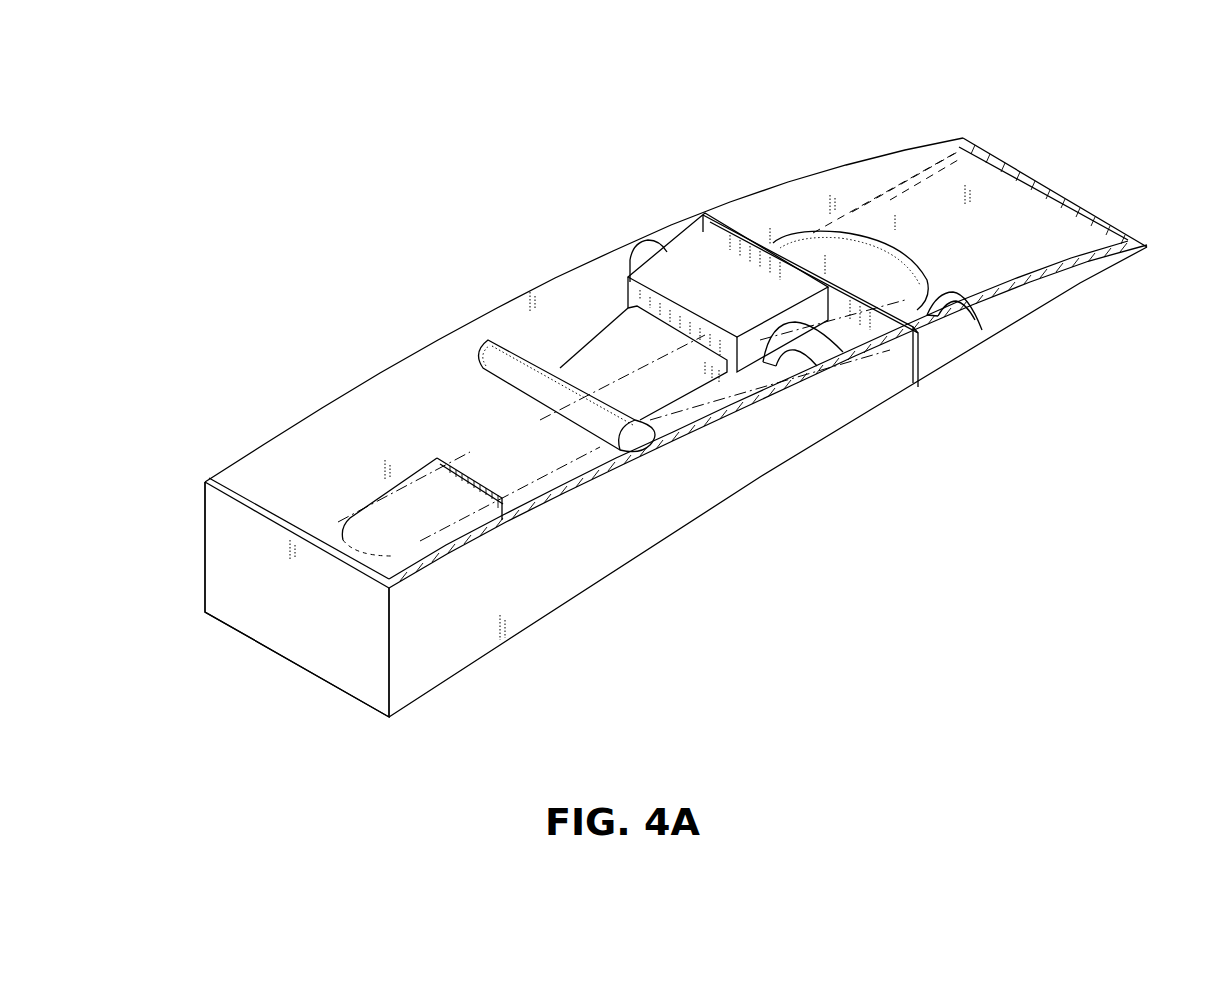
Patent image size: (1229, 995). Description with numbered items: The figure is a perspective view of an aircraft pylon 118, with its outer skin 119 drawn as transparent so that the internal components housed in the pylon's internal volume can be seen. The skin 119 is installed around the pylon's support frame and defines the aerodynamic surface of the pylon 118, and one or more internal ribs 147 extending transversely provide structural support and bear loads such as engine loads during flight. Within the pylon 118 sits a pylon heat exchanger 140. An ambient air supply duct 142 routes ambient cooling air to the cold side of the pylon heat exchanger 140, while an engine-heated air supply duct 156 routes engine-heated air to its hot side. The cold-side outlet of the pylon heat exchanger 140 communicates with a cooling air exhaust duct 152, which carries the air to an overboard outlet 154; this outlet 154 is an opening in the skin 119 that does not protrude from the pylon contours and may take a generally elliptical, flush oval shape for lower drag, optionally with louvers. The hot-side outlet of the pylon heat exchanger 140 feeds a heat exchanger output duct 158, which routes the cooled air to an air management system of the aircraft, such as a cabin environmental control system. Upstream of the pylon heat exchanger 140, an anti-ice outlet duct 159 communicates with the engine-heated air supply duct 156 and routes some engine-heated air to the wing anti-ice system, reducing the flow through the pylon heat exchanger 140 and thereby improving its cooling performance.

The pylon 118 is at (742, 522).
The outer skin 119 is at (1048, 248).
The pylon heat exchanger 140 is at (700, 252).
The ambient air supply duct 142 is at (523, 473).
The internal rib 147 is at (287, 615).
The cooling air exhaust duct 152 is at (820, 252).
The overboard outlet 154 is at (950, 293).
The engine-heated air supply duct 156 is at (815, 355).
The heat exchanger output duct 158 is at (638, 260).
The anti-ice outlet duct 159 is at (497, 350).